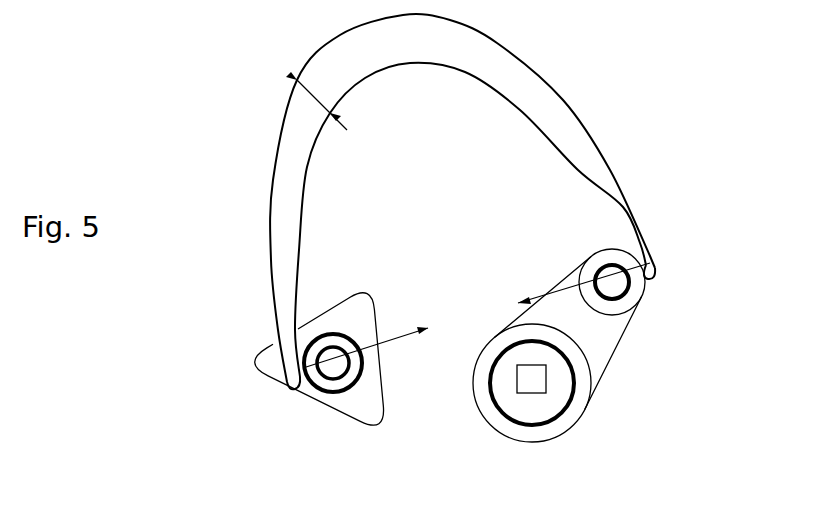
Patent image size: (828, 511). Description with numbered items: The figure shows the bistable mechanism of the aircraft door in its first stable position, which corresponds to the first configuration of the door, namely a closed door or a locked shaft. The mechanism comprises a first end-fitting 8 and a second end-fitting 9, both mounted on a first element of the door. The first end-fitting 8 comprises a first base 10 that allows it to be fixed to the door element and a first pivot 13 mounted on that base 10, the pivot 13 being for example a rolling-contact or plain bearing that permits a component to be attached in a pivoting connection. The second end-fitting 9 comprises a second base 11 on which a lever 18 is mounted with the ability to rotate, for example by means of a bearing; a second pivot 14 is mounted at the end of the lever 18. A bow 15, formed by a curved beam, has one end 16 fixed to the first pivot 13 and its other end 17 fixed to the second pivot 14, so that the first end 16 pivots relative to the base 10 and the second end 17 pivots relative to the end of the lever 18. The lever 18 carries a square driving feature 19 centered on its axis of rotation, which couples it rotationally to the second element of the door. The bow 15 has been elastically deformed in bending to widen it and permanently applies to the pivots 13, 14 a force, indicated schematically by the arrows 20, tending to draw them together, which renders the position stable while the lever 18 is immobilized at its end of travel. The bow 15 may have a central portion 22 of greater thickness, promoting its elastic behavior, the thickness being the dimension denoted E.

The first end-fitting 8 is at (290, 343).
The second end-fitting 9 is at (572, 387).
The first base 10 is at (330, 413).
The second base 11 is at (513, 391).
The first pivot 13 is at (327, 362).
The second pivot 14 is at (587, 277).
The bow 15 is at (497, 198).
The first end of the bow 16 is at (293, 378).
The second end of the bow 17 is at (650, 250).
The lever 18 is at (553, 313).
The square driving feature 19 is at (530, 384).
The arrows 20 is at (392, 335).
The central portion 22 is at (368, 47).
The thickness E is at (290, 76).